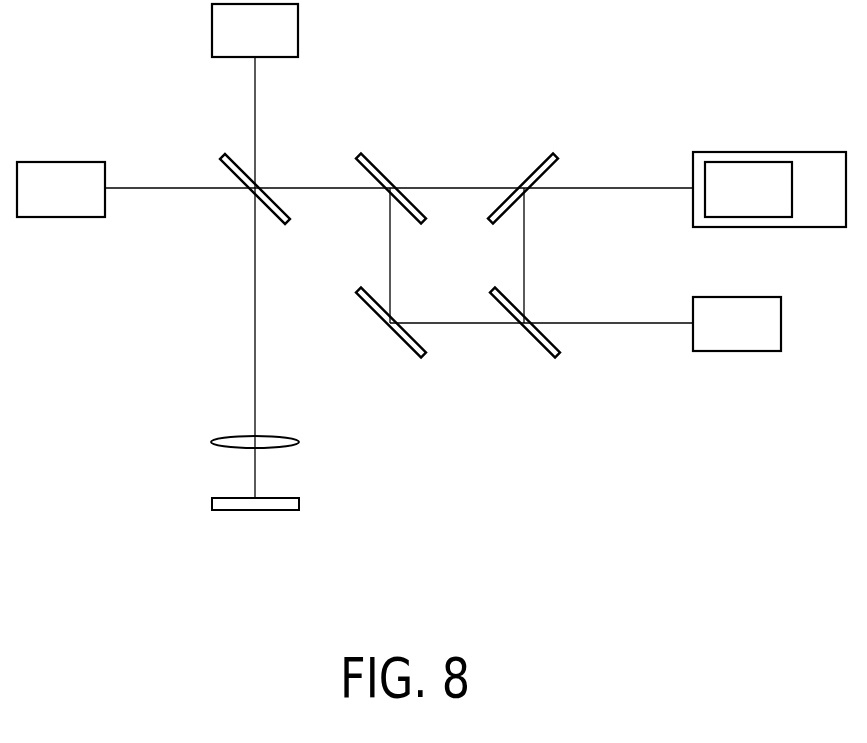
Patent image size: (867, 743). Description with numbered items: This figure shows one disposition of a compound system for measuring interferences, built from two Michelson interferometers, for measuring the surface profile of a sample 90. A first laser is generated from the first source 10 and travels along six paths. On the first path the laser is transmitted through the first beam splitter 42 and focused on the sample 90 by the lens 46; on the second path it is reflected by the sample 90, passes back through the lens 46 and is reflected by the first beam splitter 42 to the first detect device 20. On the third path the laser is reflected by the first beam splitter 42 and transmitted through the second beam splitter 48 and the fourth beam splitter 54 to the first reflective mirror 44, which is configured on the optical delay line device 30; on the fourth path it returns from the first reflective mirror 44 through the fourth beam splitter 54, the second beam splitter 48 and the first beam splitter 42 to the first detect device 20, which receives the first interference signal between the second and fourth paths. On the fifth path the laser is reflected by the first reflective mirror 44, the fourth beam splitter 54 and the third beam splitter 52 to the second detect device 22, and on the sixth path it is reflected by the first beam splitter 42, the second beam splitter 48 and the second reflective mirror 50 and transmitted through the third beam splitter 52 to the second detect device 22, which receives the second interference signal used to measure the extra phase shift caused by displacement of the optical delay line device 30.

The first source 10 is at (255, 30).
The first detect device 20 is at (61, 189).
The second detect device 22 is at (737, 324).
The optical delay line device 30 is at (769, 189).
The first reflective mirror 44 is at (748, 189).
The first beam splitter 42 is at (222, 159).
The lens 46 is at (215, 437).
The second beam splitter 48 is at (357, 158).
The second reflective mirror 50 is at (417, 357).
The third beam splitter 52 is at (550, 357).
The fourth beam splitter 54 is at (556, 157).
The sample 90 is at (215, 512).